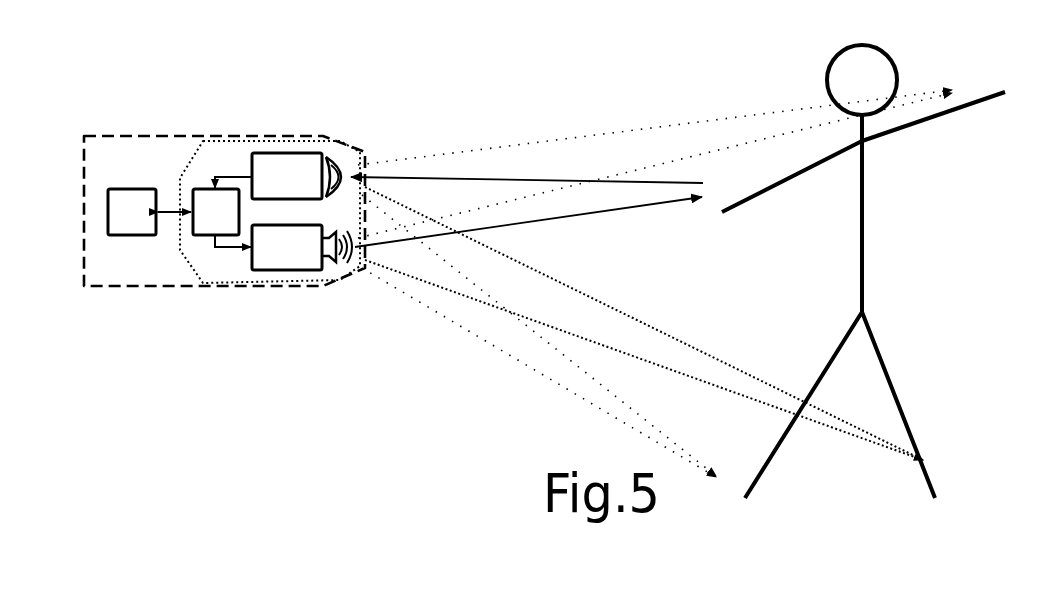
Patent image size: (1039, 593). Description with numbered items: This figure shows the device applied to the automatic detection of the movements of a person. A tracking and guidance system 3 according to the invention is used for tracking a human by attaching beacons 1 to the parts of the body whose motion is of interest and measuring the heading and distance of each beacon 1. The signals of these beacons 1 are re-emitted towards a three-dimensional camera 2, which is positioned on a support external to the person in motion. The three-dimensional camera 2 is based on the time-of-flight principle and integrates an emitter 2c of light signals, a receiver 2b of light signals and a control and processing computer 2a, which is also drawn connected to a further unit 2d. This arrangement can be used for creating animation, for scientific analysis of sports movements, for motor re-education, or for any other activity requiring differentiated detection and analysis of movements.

The beacon 1 is at (678, 271).
The three-dimensional camera 2 is at (270, 213).
The control and processing computer 2a is at (222, 212).
The receiver of light signals 2b is at (296, 176).
The emitter of light signals 2c is at (302, 247).
The memory / storage unit 2d is at (149, 212).
The tracking and guidance system 3 is at (224, 211).